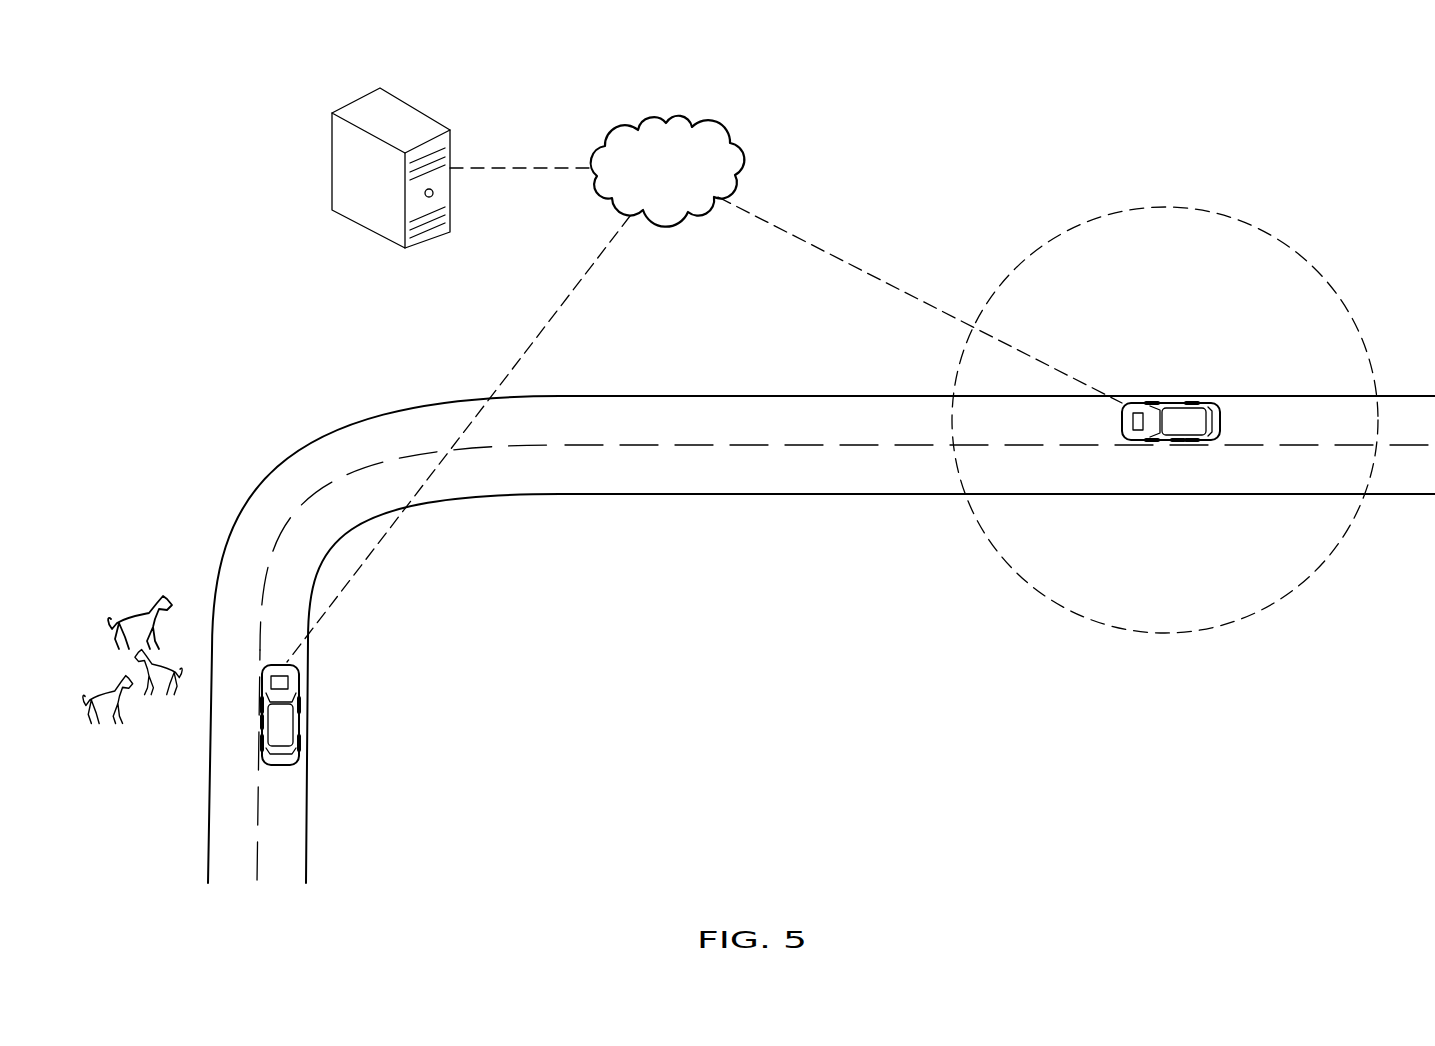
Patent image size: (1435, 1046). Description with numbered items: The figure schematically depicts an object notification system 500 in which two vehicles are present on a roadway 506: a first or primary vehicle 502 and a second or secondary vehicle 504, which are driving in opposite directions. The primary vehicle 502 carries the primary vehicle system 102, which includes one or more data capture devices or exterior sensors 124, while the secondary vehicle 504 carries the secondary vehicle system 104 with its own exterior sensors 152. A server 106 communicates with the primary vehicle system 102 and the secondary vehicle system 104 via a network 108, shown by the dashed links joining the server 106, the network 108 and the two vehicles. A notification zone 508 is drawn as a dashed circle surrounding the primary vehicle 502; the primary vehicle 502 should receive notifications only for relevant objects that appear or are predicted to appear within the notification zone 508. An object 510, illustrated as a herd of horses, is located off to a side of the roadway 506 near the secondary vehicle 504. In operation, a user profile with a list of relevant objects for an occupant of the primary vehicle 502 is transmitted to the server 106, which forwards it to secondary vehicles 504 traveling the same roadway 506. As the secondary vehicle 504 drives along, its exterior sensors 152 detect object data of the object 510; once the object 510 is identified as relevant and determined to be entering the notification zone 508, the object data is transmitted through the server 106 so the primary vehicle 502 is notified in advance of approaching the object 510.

The primary vehicle system 102 is at (1139, 412).
The secondary vehicle system 104 is at (292, 680).
The server 106 is at (414, 110).
The network 108 is at (738, 143).
The exterior sensors 124 is at (1179, 443).
The exterior sensors 152 is at (260, 722).
The object notification system 500 is at (1092, 166).
The primary vehicle 502 is at (1232, 414).
The secondary vehicle 504 is at (289, 762).
The roadway 506 is at (727, 496).
The notification zone 508 is at (1164, 206).
The object 510 is at (149, 718).